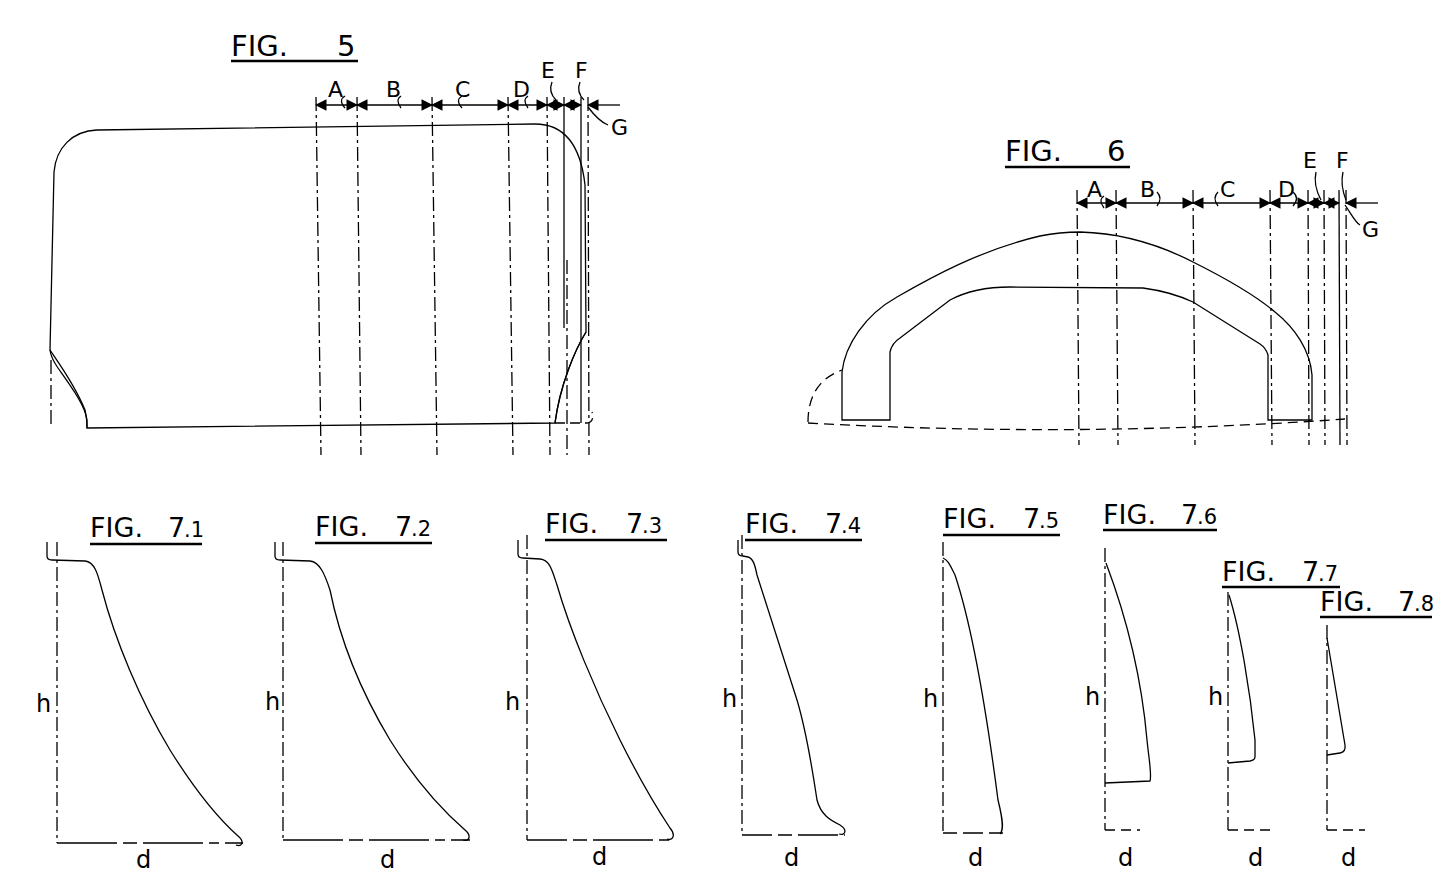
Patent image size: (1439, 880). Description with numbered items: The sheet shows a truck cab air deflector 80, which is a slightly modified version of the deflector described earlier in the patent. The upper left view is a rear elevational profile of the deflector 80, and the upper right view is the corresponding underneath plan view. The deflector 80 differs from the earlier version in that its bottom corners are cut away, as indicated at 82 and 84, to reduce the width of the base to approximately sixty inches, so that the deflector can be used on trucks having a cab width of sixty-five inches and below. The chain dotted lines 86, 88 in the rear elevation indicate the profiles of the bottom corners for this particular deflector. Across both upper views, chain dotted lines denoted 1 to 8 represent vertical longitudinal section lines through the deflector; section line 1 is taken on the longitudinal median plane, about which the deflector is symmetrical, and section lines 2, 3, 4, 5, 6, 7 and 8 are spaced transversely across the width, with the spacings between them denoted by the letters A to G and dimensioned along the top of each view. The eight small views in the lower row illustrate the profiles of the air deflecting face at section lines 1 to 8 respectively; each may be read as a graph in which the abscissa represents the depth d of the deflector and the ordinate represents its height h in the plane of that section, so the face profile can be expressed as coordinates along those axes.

In FIG. 5, the deflector 80 is at (172, 158).
In FIG. 6, the deflector 80 is at (902, 298).
In FIG. 5, the cut-out 82 is at (72, 372).
In FIG. 5, the cut-out 84 is at (575, 376).
In FIG. 5, the chain dotted line 86 is at (53, 428).
In FIG. 5, the chain dotted line 88 is at (590, 403).
In FIG. 5, the section line 1 is at (313, 310).
In FIG. 6, the section line 1 is at (1074, 357).
In FIG. 5, the section line 2 is at (355, 303).
In FIG. 6, the section line 2 is at (1114, 350).
In FIG. 5, the section line 3 is at (432, 298).
In FIG. 6, the section line 3 is at (1190, 348).
In FIG. 5, the section line 4 is at (508, 300).
In FIG. 6, the section line 4 is at (1268, 346).
In FIG. 5, the section line 5 is at (547, 300).
In FIG. 6, the section line 5 is at (1308, 335).
In FIG. 5, the section line 6 is at (564, 328).
In FIG. 6, the section line 6 is at (1318, 367).
In FIG. 5, the section line 7 is at (578, 304).
In FIG. 6, the section line 7 is at (1340, 343).
In FIG. 5, the section line 8 is at (590, 280).
In FIG. 6, the section line 8 is at (1347, 323).